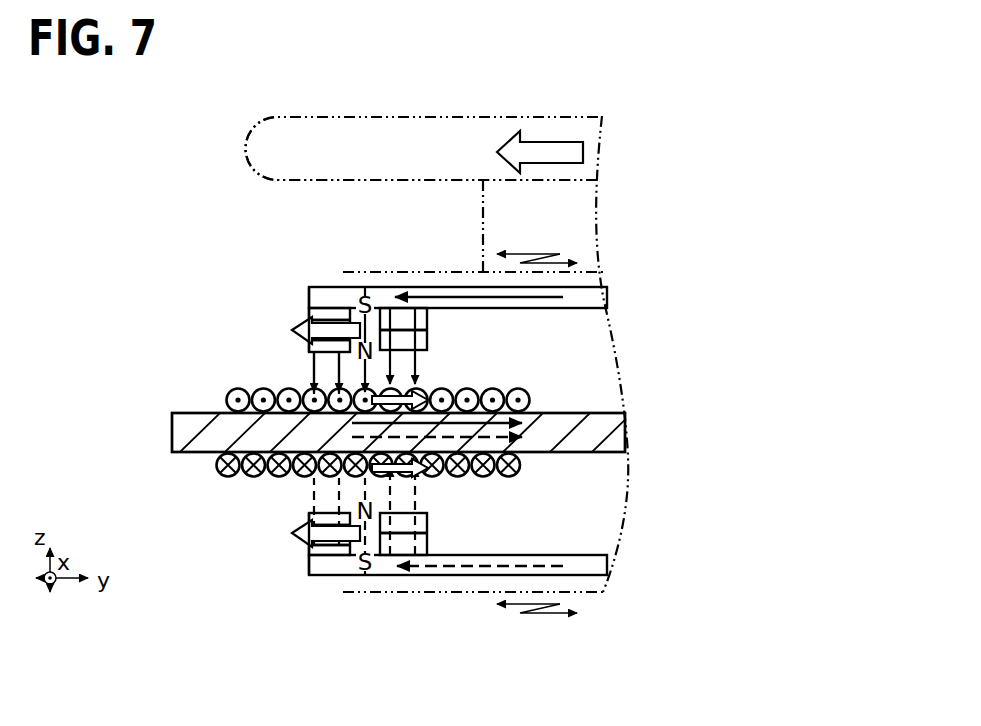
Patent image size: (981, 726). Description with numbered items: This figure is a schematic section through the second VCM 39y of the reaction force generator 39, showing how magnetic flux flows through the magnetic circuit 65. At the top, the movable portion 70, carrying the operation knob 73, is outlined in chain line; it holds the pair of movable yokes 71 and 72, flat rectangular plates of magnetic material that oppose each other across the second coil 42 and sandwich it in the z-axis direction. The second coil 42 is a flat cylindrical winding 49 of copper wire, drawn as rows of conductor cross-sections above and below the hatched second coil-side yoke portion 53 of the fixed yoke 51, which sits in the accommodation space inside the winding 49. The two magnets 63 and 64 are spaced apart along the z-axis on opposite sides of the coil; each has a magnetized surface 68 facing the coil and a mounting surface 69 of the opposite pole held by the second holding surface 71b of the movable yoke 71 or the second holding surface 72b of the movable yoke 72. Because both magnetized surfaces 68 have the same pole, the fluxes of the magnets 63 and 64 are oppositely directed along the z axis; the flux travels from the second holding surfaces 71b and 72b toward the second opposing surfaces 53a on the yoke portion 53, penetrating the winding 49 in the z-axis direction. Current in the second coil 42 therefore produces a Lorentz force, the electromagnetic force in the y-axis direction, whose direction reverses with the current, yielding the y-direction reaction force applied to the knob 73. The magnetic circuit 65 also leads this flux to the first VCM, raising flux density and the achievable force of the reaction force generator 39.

The reaction force generator 39 is at (590, 254).
The second VCM 39y is at (212, 338).
The second coil 42 is at (229, 392).
The winding 49 is at (220, 468).
The fixed yoke 51 is at (619, 438).
The second coil-side yoke portion 53 is at (178, 439).
The second opposing surfaces 53a is at (320, 392).
The magnet 63 is at (425, 340).
The magnet 64 is at (424, 526).
The magnetic circuit 65 is at (564, 398).
The magnetized surface 68 is at (410, 350).
The mounting surface 69 is at (308, 297).
The movable portion 70 is at (365, 115).
The operation knob 73 is at (422, 148).
The movable yoke 71 is at (319, 287).
The second holding surface 71b is at (337, 287).
The movable yoke 72 is at (320, 576).
The second holding surface 72b is at (338, 576).